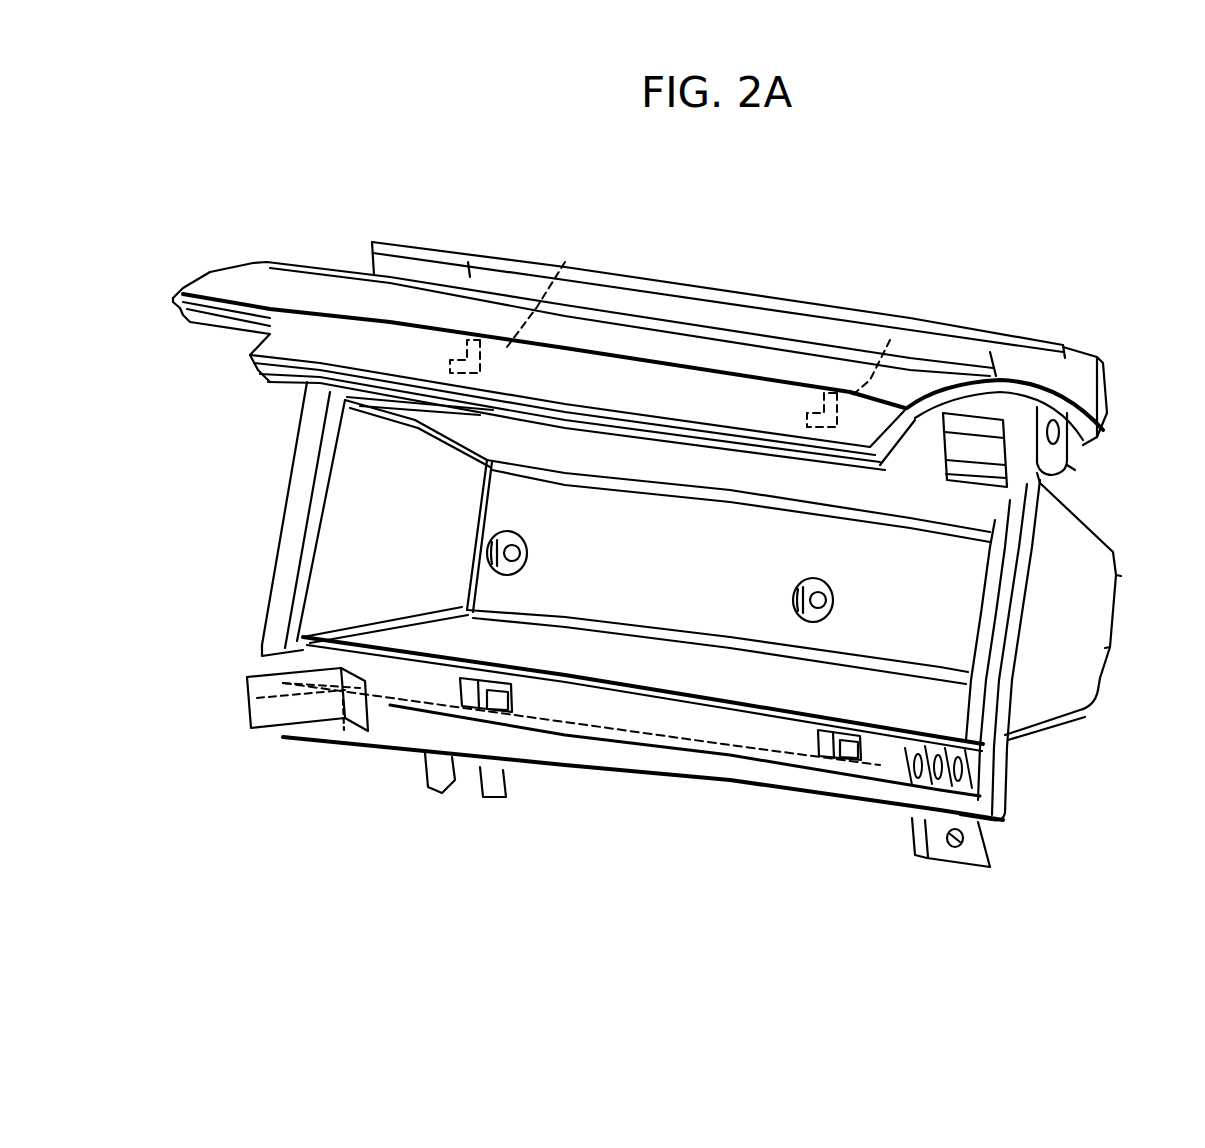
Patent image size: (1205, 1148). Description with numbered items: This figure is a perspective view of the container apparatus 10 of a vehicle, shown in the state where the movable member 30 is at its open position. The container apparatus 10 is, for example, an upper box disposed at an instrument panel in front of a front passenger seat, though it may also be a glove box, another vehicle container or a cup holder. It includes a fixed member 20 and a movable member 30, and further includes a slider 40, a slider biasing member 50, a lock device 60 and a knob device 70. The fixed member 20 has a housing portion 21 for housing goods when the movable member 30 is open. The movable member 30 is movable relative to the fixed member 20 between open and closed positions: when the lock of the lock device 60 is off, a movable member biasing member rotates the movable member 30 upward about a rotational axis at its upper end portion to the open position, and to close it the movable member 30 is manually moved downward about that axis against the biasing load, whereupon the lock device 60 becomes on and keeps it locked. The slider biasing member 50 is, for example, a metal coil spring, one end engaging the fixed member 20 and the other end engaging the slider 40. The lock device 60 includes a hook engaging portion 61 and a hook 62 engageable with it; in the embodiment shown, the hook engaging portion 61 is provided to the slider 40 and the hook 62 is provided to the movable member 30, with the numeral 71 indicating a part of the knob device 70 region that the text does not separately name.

The container apparatus 10 is at (350, 758).
The fixed member 20 is at (652, 601).
The housing portion 21 is at (347, 493).
The movable member 30 is at (257, 284).
The slider 40 is at (670, 757).
The slider biasing member 50 is at (932, 786).
The lock device 60 is at (668, 785).
The hook engaging portion 61 is at (513, 705).
The hook 62 is at (565, 262).
The knob device 70 is at (271, 737).
The damper housing 71 is at (265, 703).